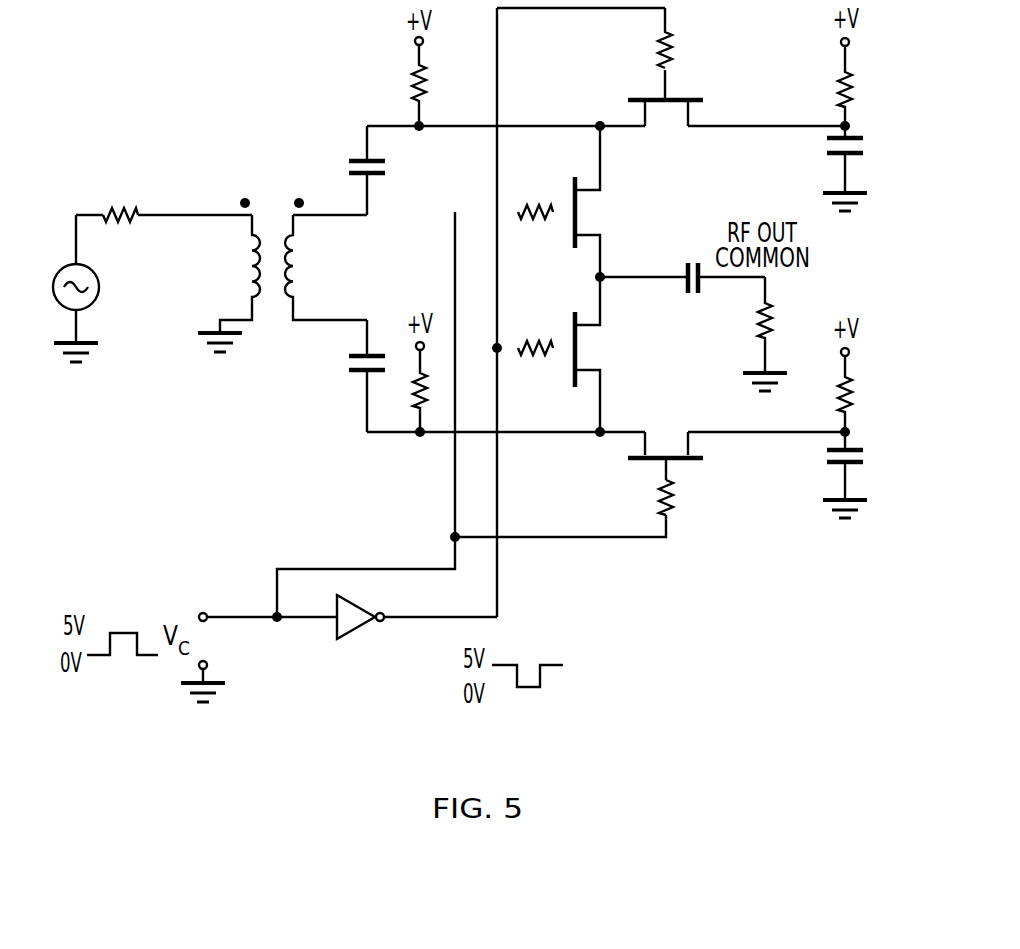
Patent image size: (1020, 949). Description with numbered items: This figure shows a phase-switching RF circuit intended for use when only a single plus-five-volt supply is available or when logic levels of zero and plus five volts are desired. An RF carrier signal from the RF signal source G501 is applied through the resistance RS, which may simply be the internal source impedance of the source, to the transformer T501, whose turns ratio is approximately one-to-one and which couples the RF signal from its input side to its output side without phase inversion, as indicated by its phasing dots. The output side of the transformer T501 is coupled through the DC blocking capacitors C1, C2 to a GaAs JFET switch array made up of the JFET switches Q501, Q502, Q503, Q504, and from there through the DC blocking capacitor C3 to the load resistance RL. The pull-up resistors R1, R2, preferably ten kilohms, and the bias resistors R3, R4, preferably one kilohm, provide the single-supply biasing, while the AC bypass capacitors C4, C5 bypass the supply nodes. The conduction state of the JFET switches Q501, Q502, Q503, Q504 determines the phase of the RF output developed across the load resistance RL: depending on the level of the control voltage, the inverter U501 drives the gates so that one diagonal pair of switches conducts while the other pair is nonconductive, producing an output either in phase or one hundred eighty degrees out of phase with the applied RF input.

The RF signal source G501 is at (104, 313).
The resistance RS is at (122, 210).
The transformer T501 is at (292, 192).
The DC blocking capacitor C1 is at (351, 170).
The DC blocking capacitor C2 is at (351, 376).
The pull-up resistor R1 is at (404, 85).
The pull-up resistor R2 is at (406, 391).
The bias resistor R3 is at (860, 86).
The bias resistor R4 is at (860, 394).
The DC blocking capacitor C3 is at (685, 260).
The AC bypass capacitor C4 is at (858, 168).
The AC bypass capacitor C5 is at (858, 475).
The load resistance RL is at (783, 334).
The JFET switch Q501 is at (666, 84).
The JFET switch Q502 is at (580, 210).
The JFET switch Q503 is at (580, 350).
The JFET switch Q504 is at (665, 456).
The inverter U501 is at (371, 607).